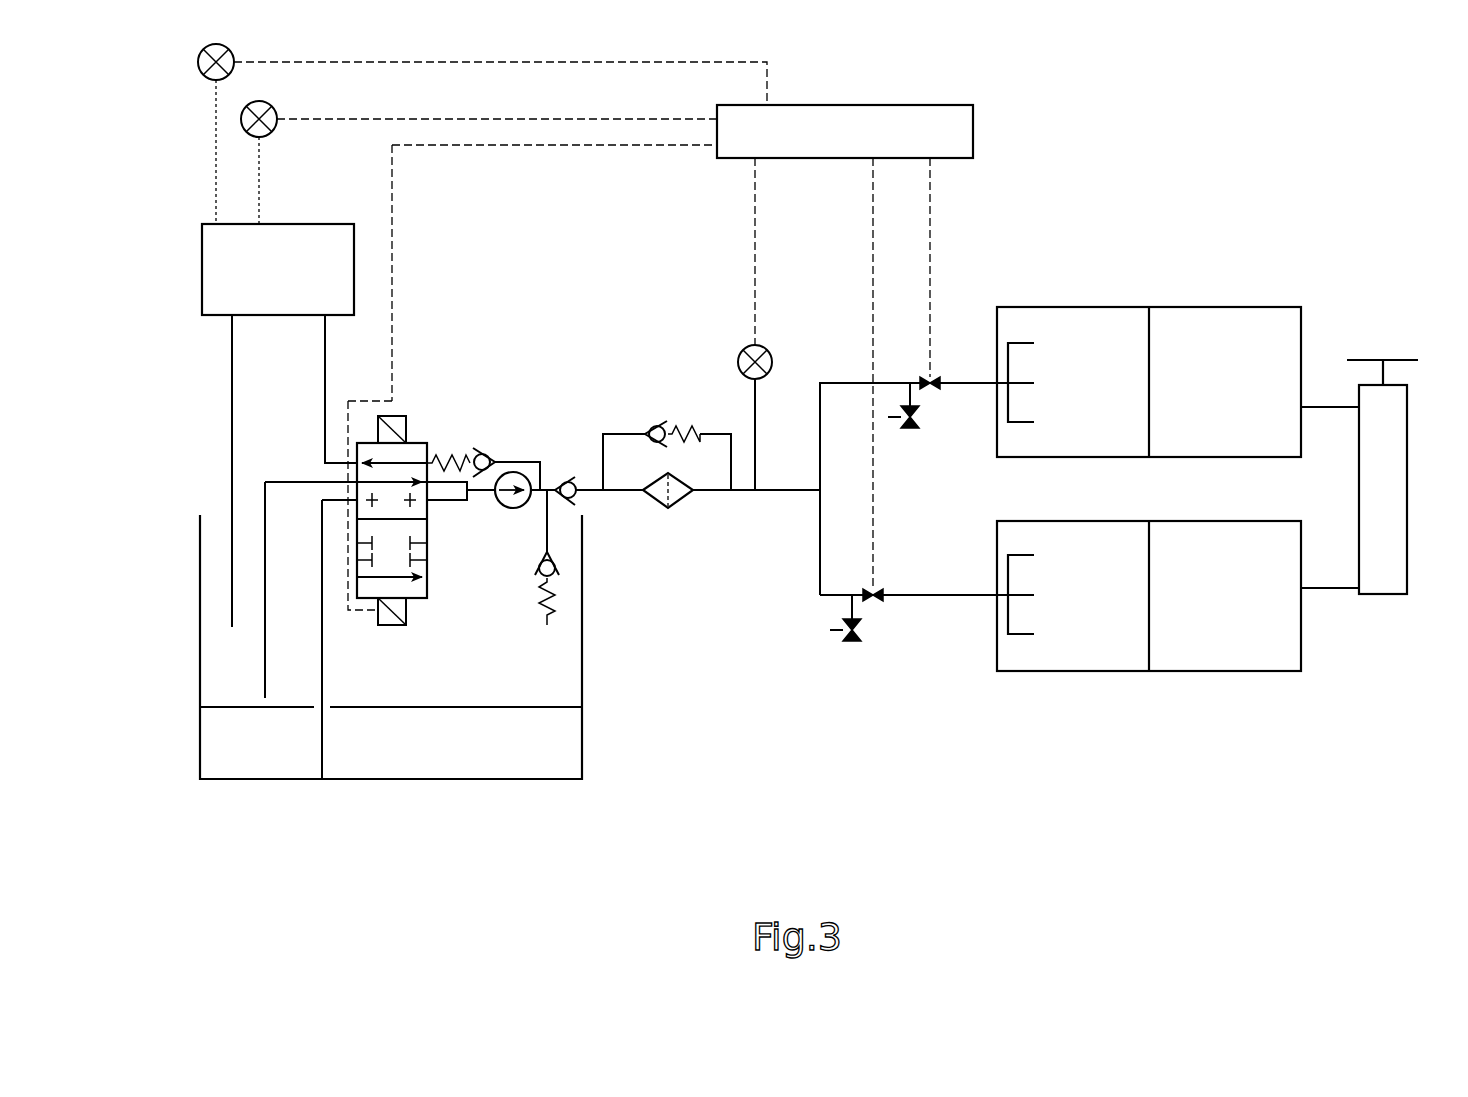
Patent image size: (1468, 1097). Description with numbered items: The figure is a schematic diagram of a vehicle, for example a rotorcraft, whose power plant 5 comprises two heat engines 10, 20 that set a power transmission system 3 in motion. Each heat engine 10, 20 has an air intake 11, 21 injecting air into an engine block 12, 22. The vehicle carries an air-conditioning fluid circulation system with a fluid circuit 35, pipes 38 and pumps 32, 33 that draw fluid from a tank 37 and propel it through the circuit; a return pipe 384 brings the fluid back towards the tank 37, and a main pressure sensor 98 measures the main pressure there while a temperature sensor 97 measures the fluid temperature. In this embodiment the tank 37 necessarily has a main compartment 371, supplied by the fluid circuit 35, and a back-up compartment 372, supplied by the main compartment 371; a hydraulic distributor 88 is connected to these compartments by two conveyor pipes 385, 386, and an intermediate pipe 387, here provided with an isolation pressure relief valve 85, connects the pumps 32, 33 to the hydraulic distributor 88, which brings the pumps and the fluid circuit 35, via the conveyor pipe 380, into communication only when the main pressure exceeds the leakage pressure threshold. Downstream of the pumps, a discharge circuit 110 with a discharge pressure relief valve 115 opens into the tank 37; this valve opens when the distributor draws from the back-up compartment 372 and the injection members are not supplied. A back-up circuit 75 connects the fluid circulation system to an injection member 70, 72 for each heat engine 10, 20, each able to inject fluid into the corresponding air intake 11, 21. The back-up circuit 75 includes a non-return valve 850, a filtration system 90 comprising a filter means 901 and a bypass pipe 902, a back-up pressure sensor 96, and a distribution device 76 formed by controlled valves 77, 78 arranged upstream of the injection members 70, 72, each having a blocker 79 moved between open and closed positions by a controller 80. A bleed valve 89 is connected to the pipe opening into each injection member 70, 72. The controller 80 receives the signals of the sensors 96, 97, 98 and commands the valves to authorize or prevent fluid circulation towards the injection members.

The power transmission system 3 is at (1383, 617).
The power plant 5 is at (1286, 711).
The heat engine 10 is at (1178, 357).
The air intake 11 is at (1137, 453).
The engine block 12 is at (1285, 453).
The heat engine 20 is at (1178, 573).
The air intake 21 is at (1137, 667).
The engine block 22 is at (1285, 667).
The pump 32 is at (496, 524).
The pump 33 is at (513, 510).
The fluid circuit 35 is at (296, 283).
The tank 37 is at (453, 694).
The pipes 38 is at (223, 389).
The injection member 70 is at (1056, 354).
The injection member 72 is at (1056, 575).
The back-up circuit 75 is at (752, 540).
The distribution device 76 is at (941, 488).
The controlled valve 77 is at (933, 377).
The controlled valve 78 is at (882, 600).
The blocker 79 is at (930, 365).
The controller 80 is at (862, 146).
The isolation pressure relief valve 85 is at (499, 431).
The hydraulic distributor 88 is at (435, 424).
The bleed valve 89 is at (912, 448).
The filtration system 90 is at (695, 525).
The back-up pressure sensor 96 is at (773, 362).
The temperature sensor 97 is at (196, 62).
The main pressure sensor 98 is at (241, 119).
The discharge circuit 110 is at (520, 607).
The discharge pressure relief valve 115 is at (540, 575).
The main compartment 371 is at (563, 672).
The back-up compartment 372 is at (563, 748).
The conveyor pipe 380 is at (325, 382).
The return pipe 384 is at (232, 365).
The conveyor pipe 385 is at (292, 482).
The conveyor pipe 386 is at (322, 550).
The intermediate pipe 387 is at (535, 444).
The non-return valve 850 is at (565, 480).
The filter means 901 is at (655, 505).
The bypass pipe 902 is at (662, 394).